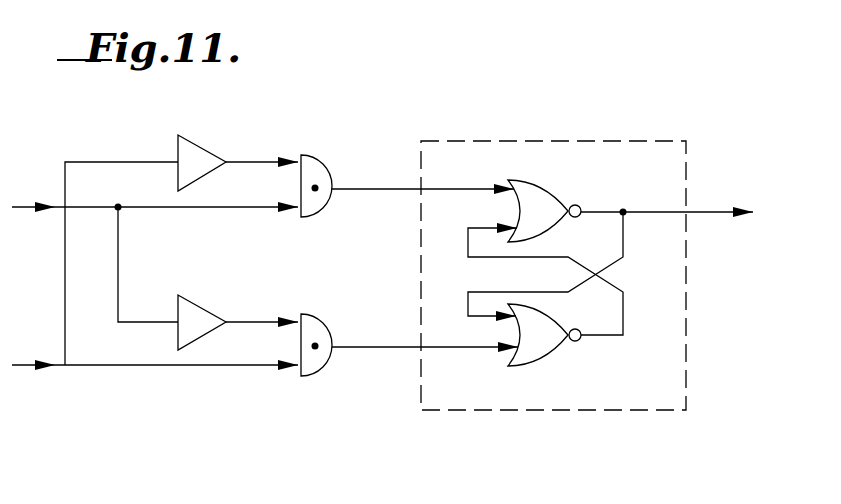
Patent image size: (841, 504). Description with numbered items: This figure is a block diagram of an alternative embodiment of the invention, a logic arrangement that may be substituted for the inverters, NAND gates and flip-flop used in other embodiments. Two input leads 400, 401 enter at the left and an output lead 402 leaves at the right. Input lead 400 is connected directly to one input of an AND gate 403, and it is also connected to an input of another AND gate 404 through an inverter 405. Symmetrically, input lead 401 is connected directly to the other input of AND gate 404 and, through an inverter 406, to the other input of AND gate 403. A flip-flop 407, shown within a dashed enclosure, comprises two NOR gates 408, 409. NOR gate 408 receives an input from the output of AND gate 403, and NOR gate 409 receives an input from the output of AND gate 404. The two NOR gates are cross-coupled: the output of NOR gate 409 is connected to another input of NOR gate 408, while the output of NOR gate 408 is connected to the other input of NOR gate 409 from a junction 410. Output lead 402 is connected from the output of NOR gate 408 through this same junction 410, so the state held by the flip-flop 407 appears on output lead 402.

The input lead 400 is at (55, 205).
The input lead 401 is at (55, 367).
The output lead 402 is at (710, 213).
The AND gate 403 is at (328, 172).
The AND gate 404 is at (328, 330).
The inverter 405 is at (207, 318).
The inverter 406 is at (207, 156).
The flip-flop 407 is at (628, 141).
The NOR gate 408 is at (548, 192).
The NOR gate 409 is at (544, 357).
The junction 410 is at (624, 215).